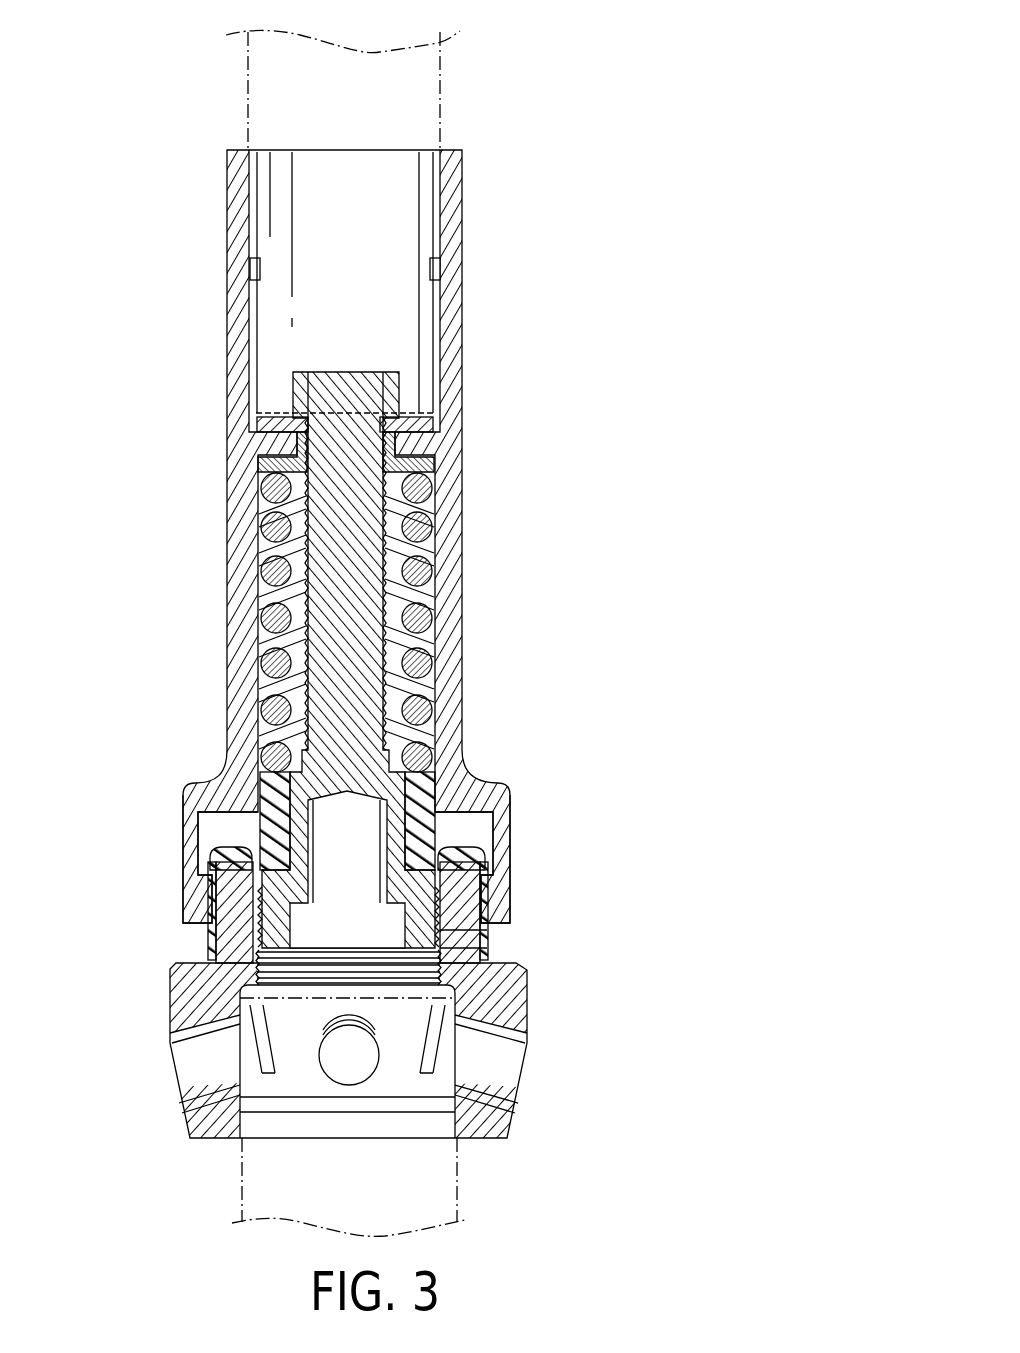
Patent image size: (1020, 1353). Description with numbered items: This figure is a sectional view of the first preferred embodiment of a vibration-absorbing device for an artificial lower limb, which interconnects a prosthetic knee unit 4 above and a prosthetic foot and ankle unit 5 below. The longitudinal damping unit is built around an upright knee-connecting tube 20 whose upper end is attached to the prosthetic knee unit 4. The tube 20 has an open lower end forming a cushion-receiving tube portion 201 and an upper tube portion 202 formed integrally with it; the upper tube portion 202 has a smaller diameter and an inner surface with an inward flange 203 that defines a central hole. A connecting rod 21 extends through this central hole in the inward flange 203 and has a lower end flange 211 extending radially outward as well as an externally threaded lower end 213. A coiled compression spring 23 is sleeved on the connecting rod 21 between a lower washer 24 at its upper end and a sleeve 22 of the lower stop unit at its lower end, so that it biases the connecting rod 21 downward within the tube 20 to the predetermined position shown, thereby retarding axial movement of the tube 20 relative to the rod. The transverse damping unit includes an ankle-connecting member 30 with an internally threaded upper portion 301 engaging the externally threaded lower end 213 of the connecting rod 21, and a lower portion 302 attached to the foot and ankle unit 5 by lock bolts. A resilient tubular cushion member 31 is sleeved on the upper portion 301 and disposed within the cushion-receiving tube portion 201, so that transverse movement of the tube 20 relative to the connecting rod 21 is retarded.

The prosthetic knee unit 4 is at (458, 74).
The prosthetic foot and ankle unit 5 is at (513, 1199).
The upright knee-connecting tube 20 is at (656, 669).
The connecting rod 21 is at (318, 593).
The sleeve 22 is at (420, 788).
The coiled compression spring 23 is at (420, 622).
The lower washer 24 is at (258, 462).
The ankle-connecting member 30 is at (656, 1086).
The tubular cushion member 31 is at (213, 862).
The cushion-receiving tube portion 201 is at (513, 877).
The upper tube portion 202 is at (463, 542).
The inward flange 203 is at (425, 448).
The lower end flange 211 is at (420, 893).
The externally threaded lower end 213 is at (487, 938).
The internally threaded upper portion 301 is at (207, 953).
The lower portion 302 is at (503, 990).